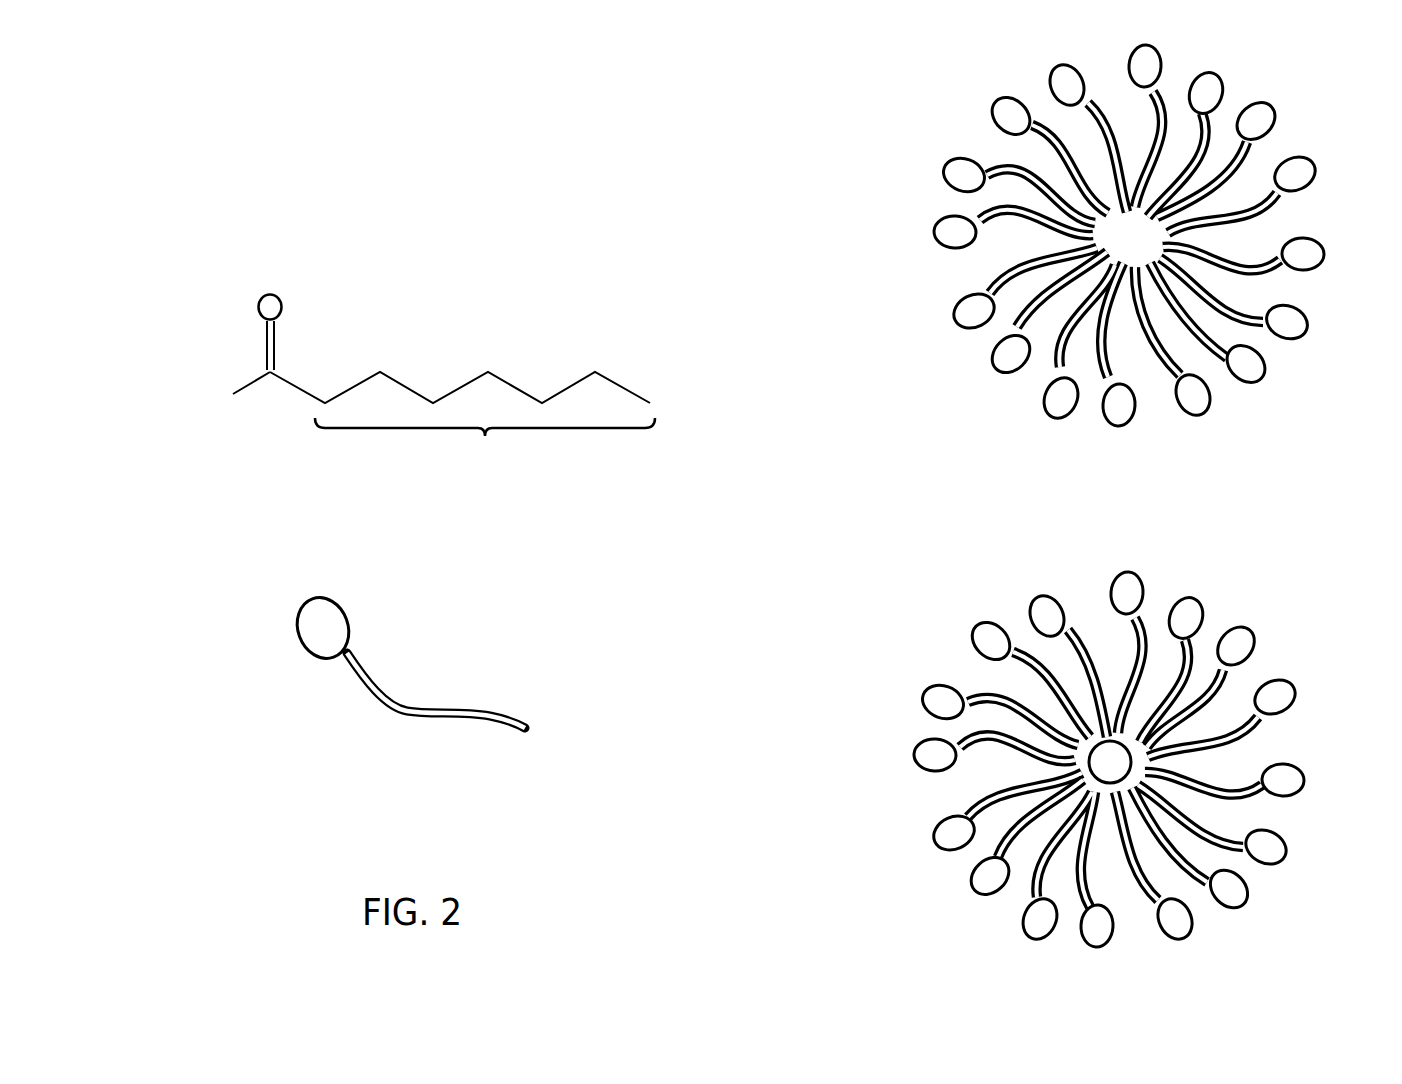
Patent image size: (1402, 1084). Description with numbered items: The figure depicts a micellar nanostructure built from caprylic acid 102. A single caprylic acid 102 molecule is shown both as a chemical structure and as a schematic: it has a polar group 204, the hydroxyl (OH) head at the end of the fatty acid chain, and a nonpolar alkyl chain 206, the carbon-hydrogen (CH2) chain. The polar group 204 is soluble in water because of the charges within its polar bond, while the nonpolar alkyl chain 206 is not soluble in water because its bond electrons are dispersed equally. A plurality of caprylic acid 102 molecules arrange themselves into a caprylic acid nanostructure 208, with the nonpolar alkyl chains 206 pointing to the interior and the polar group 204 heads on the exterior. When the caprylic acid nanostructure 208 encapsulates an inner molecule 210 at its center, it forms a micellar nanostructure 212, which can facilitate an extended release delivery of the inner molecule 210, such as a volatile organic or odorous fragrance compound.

The caprylic acid 102 is at (396, 256).
The polar group 204 is at (199, 268).
The nonpolar alkyl chain 206 is at (1002, 786).
The caprylic acid nanostructure 208 is at (935, 70).
The inner molecule 210 is at (1106, 763).
The micellar nanostructure 212 is at (918, 600).